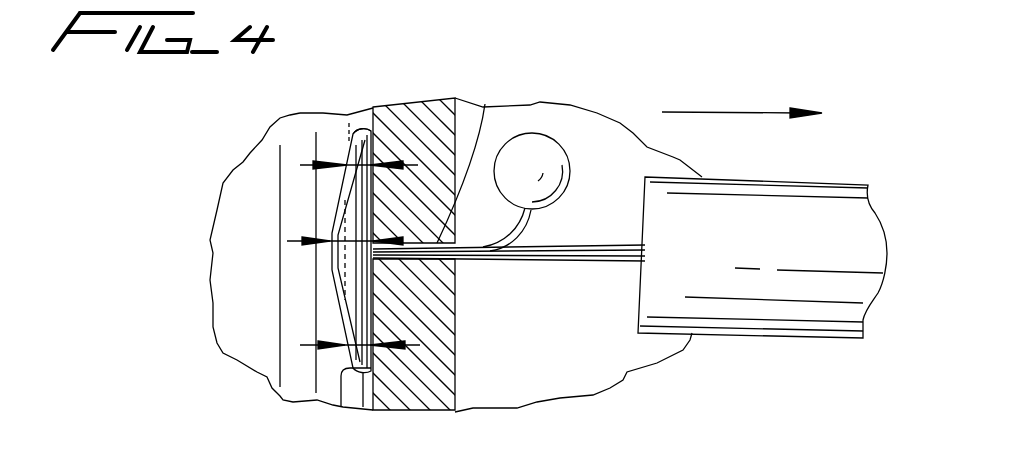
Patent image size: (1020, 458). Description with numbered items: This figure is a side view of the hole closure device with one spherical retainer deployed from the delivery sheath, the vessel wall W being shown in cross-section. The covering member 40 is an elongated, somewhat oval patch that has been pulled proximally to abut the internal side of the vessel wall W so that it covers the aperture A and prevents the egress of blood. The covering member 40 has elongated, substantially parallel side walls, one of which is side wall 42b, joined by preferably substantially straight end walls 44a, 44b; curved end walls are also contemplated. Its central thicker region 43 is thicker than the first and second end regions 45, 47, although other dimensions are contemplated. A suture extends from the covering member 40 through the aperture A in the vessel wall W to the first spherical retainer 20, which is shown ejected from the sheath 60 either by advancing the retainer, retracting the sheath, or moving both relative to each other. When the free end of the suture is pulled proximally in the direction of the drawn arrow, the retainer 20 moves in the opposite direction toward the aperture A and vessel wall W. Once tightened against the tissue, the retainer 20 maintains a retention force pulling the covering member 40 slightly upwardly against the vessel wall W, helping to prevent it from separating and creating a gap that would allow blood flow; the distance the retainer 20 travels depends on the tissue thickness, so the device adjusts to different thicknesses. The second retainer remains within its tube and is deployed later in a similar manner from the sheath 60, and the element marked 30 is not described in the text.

The first spherical retainer 20 is at (540, 153).
The wire strands 30 is at (550, 243).
The covering member 40 is at (373, 204).
The side wall 42b is at (373, 204).
The thicker region 43 is at (300, 242).
The end wall 44a is at (370, 130).
The end wall 44b is at (341, 407).
The first end region 45 is at (310, 350).
The second end region 47 is at (307, 163).
The delivery sheath 60 is at (777, 307).
The aperture A is at (485, 104).
The vessel wall W is at (420, 388).